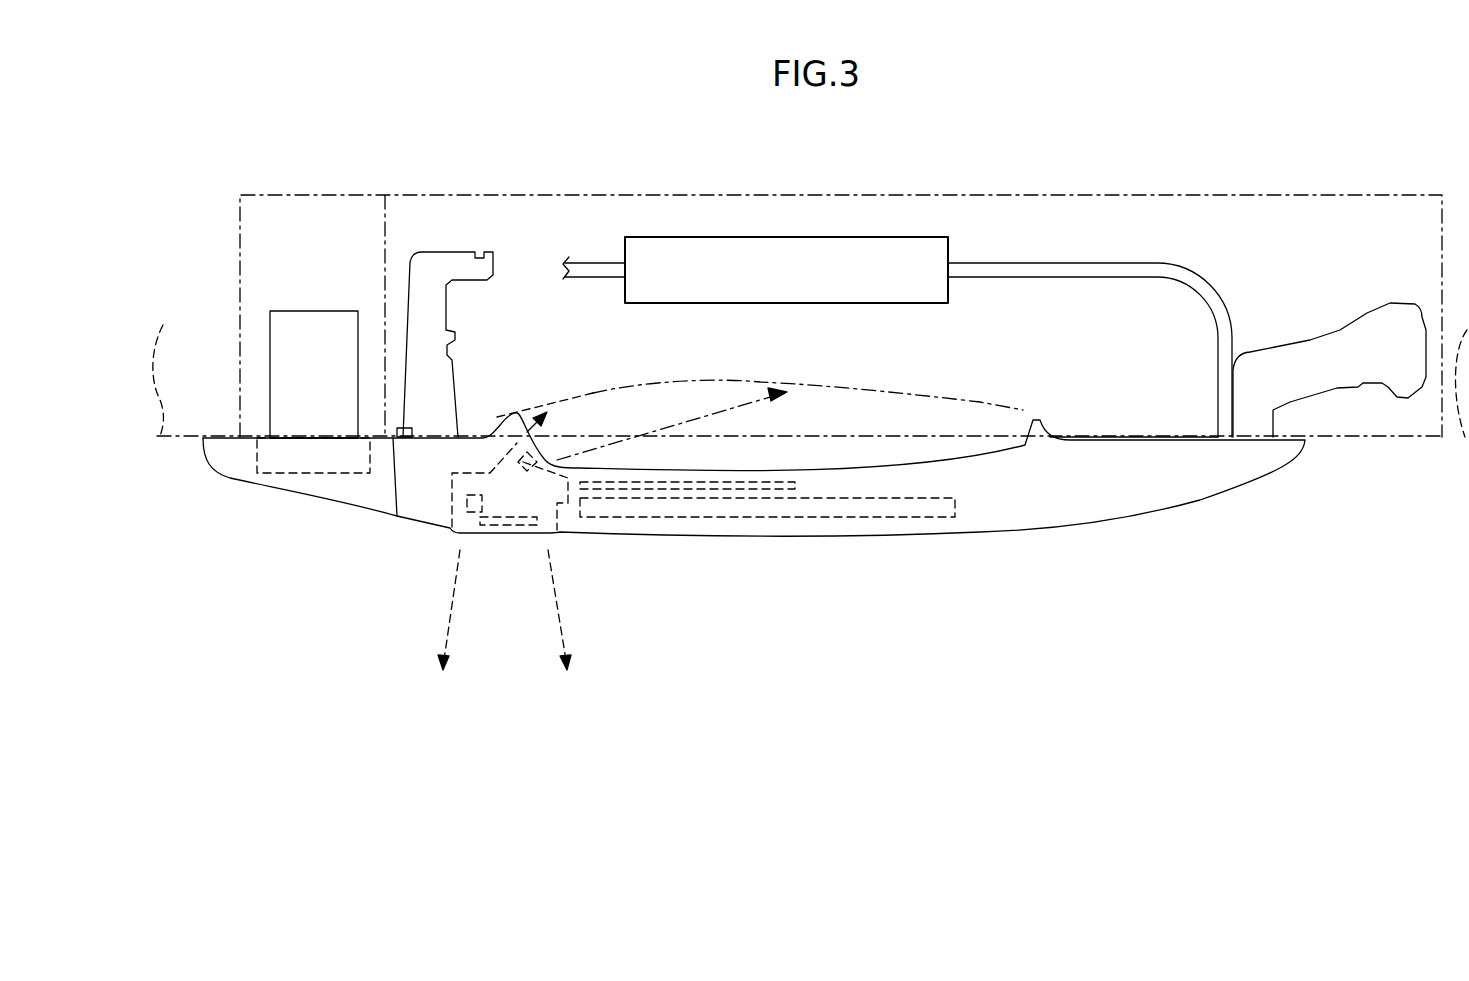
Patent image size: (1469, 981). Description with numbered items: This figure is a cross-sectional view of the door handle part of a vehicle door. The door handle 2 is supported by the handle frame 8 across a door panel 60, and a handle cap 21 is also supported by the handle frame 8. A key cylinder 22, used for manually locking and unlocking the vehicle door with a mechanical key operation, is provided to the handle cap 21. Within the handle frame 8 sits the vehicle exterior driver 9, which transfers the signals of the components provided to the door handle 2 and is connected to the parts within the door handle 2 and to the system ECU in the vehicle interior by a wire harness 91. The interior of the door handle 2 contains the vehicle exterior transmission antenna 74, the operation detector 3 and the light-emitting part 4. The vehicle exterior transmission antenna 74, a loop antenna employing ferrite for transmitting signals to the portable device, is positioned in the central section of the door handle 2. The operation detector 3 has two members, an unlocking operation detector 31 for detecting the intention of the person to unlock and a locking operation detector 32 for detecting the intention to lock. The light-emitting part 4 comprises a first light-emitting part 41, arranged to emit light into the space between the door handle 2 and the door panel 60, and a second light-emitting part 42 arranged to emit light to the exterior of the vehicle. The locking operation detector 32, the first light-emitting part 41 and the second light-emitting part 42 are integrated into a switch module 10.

The door handle 2 is at (1089, 525).
The operation detector 3 is at (678, 521).
The light-emitting part 4 is at (730, 505).
The handle frame 8 is at (1240, 197).
The vehicle exterior driver 9 is at (778, 237).
The switch module 10 is at (452, 487).
The handle cap 21 is at (322, 490).
The key cylinder 22 is at (282, 352).
The unlocking operation detector 31 is at (757, 480).
The locking operation detector 32 is at (580, 535).
The first light-emitting part 41 is at (548, 458).
The second light-emitting part 42 is at (485, 535).
The door panel 60 is at (1340, 438).
The vehicle exterior transmission antenna 74 is at (823, 518).
The wire harness 91 is at (592, 267).